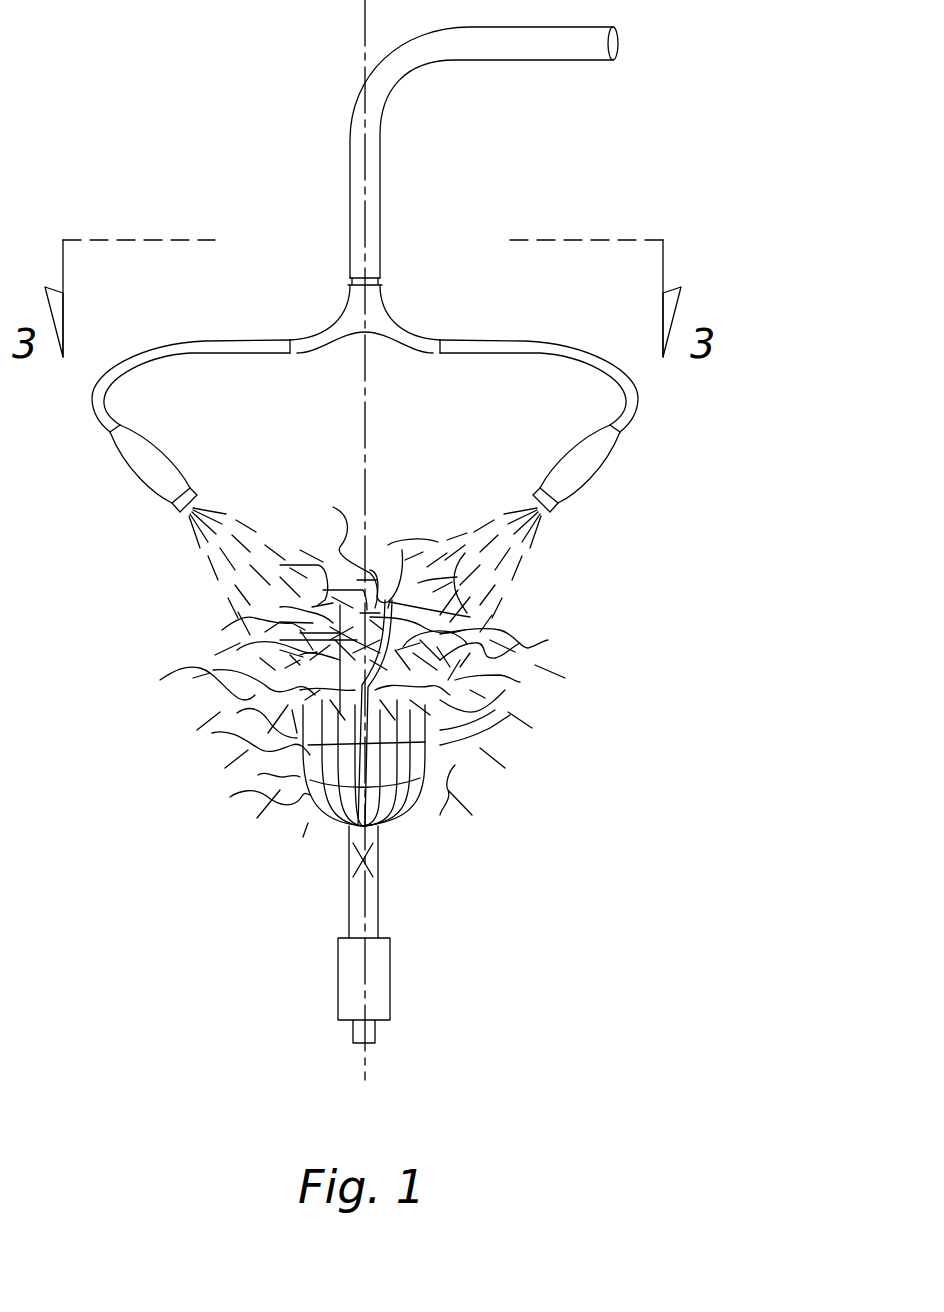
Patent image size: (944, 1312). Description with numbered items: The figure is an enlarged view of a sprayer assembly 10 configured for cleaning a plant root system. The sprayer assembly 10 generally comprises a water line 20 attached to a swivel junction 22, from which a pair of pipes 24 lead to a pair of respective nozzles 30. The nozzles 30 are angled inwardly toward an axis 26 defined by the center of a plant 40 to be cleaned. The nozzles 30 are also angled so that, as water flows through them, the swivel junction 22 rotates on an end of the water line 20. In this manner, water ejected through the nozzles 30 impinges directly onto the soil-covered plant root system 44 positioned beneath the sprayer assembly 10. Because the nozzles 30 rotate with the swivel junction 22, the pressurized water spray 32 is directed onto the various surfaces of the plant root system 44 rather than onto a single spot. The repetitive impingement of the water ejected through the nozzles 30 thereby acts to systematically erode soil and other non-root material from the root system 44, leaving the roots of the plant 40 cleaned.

The sprayer assembly 10 is at (212, 200).
The water line 20 is at (350, 138).
The swivel junction 22 is at (355, 315).
The pipes 24 is at (636, 390).
The axis 26 is at (362, 915).
The nozzles 30 is at (160, 447).
The pressurized water spray 32 is at (220, 515).
The plant 40 is at (280, 832).
The plant root system 44 is at (222, 630).